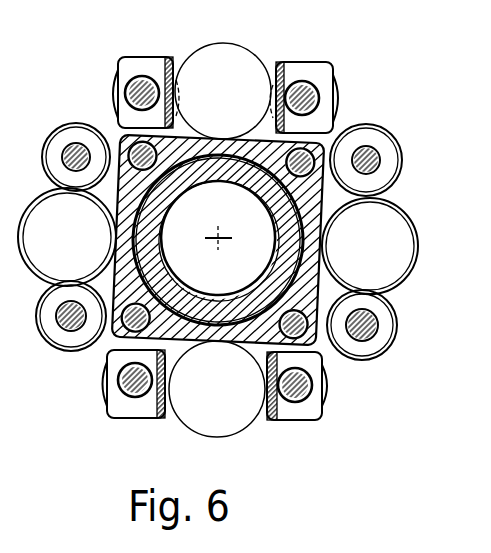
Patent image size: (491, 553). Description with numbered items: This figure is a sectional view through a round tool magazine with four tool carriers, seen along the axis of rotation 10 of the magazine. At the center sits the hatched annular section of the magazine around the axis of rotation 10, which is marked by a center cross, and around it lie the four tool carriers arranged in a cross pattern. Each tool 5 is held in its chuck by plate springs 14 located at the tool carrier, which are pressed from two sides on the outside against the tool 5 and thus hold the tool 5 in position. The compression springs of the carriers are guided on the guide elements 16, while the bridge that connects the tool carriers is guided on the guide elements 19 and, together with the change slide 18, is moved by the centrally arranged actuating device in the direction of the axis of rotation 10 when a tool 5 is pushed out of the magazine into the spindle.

The tool 5 is at (233, 410).
The axis of rotation 10 is at (222, 234).
The plate spring 14 is at (175, 82).
The guide element 16 is at (130, 419).
The change slide 18 is at (403, 281).
The guide element 19 is at (323, 348).